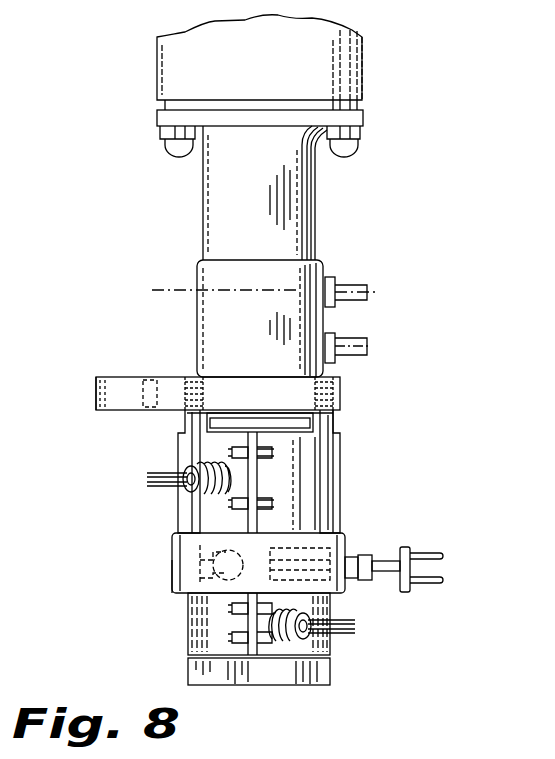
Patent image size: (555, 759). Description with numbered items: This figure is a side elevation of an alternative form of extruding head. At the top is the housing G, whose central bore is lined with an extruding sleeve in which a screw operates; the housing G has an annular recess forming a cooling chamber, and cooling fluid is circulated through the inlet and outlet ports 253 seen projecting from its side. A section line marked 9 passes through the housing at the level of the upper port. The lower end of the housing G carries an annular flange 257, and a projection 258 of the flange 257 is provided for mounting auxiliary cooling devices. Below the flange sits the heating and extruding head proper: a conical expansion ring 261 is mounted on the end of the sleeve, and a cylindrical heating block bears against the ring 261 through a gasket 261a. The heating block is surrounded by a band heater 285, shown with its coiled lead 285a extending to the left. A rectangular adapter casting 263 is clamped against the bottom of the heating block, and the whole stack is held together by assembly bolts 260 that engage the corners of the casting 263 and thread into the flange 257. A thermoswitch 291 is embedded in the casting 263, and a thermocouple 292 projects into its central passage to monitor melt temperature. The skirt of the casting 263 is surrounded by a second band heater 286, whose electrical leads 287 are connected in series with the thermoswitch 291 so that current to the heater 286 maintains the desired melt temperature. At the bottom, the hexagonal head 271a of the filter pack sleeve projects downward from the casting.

The housing G is at (312, 203).
The section line 9- 9 is at (152, 265).
The inlet and outlet ports 253 is at (328, 293).
The annular flange 257 is at (340, 390).
The projection 258 is at (110, 366).
The assembly bolt 260 is at (188, 423).
The conical expansion ring 261 is at (223, 426).
The gasket 261a is at (300, 437).
The band heater 285 is at (297, 507).
The coil spring 285a is at (147, 479).
The adapter casting 263 is at (172, 560).
The thermoswitch 291 is at (173, 573).
The thermocouple 292 is at (379, 553).
The band heater 286 is at (330, 645).
The electrical leads 287 is at (355, 633).
The hexagonal head 271a is at (330, 675).